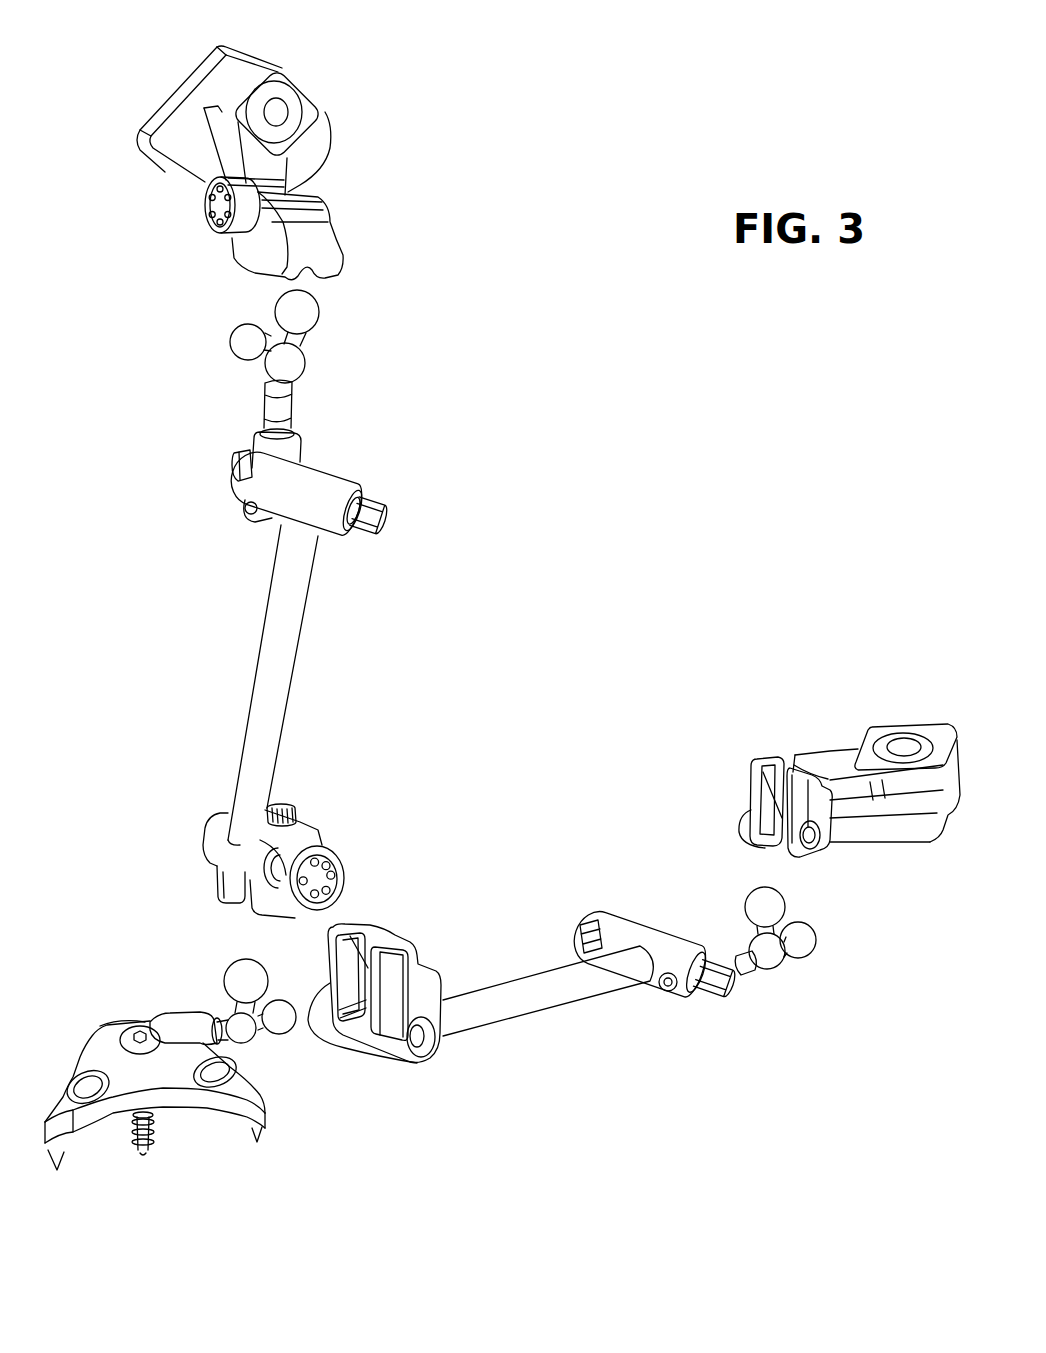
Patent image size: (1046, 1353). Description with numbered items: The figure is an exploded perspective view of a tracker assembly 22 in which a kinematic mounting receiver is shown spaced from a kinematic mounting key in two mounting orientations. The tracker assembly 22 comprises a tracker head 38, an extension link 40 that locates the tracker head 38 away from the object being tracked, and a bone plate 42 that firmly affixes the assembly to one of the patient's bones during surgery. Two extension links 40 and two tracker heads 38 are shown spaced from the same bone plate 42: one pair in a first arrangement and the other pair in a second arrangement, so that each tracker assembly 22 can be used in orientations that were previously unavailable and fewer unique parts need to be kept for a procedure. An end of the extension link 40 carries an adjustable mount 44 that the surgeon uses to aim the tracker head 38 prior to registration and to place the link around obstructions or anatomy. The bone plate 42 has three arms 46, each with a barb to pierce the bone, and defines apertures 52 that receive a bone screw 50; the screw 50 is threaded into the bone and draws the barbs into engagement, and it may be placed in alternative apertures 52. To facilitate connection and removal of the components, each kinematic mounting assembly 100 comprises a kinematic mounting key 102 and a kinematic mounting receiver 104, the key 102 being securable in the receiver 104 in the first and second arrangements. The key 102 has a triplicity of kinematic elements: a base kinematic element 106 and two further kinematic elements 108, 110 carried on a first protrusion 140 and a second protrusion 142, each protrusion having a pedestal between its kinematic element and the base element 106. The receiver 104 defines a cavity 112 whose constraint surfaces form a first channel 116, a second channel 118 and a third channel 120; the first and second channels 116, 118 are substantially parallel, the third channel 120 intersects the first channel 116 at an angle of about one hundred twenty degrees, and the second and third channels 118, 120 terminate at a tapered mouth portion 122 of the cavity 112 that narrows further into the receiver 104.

The tracker assembly 22 is at (580, 482).
The tracker head 38 is at (338, 82).
The extension link 40 is at (292, 611).
The bone plate 42 is at (151, 1200).
The adjustable mount 44 is at (394, 490).
The arm 46 is at (80, 1147).
The bone screw 50 is at (150, 1146).
The aperture 52 is at (108, 1022).
The kinematic mounting assembly 100 is at (357, 297).
The kinematic mounting key 102 is at (331, 353).
The kinematic mounting receiver 104 is at (328, 252).
The base kinematic element 106 is at (300, 372).
The kinematic element 108 is at (592, 702).
The kinematic element 110 is at (436, 668).
The cavity 112 is at (278, 806).
The first channel 116 is at (281, 815).
The second channel 118 is at (358, 1017).
The third channel 120 is at (366, 940).
The mouth portion 122 is at (560, 889).
The first protrusion 140 is at (312, 318).
The second protrusion 142 is at (239, 338).